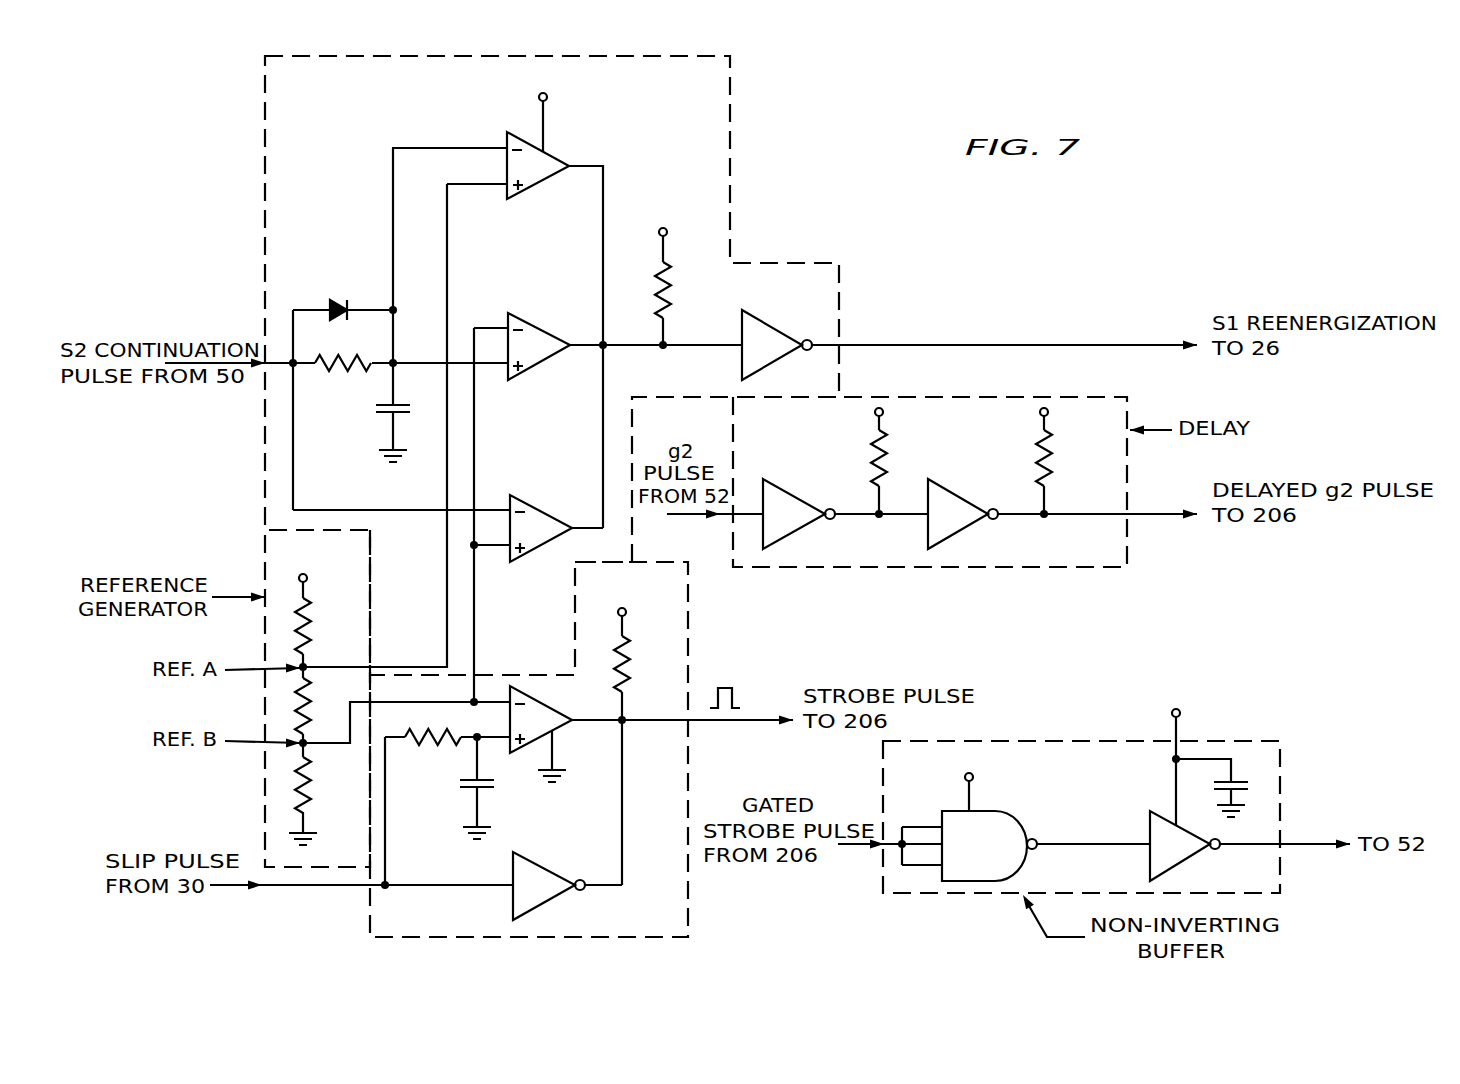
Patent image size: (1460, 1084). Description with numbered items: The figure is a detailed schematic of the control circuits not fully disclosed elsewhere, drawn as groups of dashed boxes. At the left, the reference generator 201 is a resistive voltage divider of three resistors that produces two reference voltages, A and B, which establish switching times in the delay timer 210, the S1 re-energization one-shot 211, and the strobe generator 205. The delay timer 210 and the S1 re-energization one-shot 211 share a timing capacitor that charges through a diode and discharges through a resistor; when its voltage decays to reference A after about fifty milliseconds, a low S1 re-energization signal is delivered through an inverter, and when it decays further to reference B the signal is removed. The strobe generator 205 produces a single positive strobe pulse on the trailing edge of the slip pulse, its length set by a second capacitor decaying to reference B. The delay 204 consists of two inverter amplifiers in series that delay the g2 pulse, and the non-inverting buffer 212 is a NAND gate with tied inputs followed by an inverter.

The reference generator 201 is at (268, 553).
The delay 204 is at (1035, 567).
The strobe generator 205 is at (386, 937).
The delay timer 210 is at (265, 188).
The S1 re-energization one-shot 211 is at (670, 379).
The non-inverting buffer 212 is at (1280, 790).